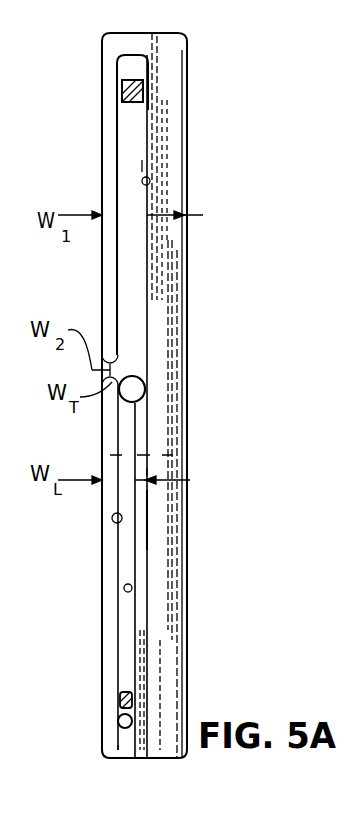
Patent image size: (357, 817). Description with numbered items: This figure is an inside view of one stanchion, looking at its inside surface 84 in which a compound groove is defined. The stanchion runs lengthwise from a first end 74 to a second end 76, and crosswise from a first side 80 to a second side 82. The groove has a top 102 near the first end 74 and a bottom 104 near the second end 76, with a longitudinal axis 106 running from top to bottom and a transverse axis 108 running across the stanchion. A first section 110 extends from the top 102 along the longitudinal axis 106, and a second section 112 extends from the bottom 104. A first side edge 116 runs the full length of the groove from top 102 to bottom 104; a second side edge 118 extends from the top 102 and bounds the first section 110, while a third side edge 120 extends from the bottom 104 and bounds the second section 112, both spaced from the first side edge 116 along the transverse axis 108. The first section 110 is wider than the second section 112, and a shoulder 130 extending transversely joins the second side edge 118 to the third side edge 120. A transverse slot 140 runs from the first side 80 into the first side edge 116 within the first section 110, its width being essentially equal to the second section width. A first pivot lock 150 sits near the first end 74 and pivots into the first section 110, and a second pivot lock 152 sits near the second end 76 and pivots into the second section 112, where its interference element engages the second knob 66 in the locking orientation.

The first end 74 is at (157, 34).
The top 102 is at (152, 53).
The first pivot lock 150 is at (148, 82).
The first section 110 is at (142, 166).
The second side edge 118 is at (150, 181).
The transverse slot 140 is at (113, 370).
The shoulder 130 is at (137, 404).
The transverse axis 108 is at (165, 443).
The longitudinal axis 106 is at (148, 515).
The inside surface 84 is at (175, 535).
The second section 112 is at (136, 566).
The third side edge 120 is at (132, 588).
The second pivot lock 152 is at (132, 703).
The second knob 66 is at (133, 719).
The second side 82 is at (182, 710).
The first side 80 is at (100, 696).
The bottom 104 is at (120, 731).
The second end 76 is at (110, 760).
The first side edge 116 is at (112, 518).